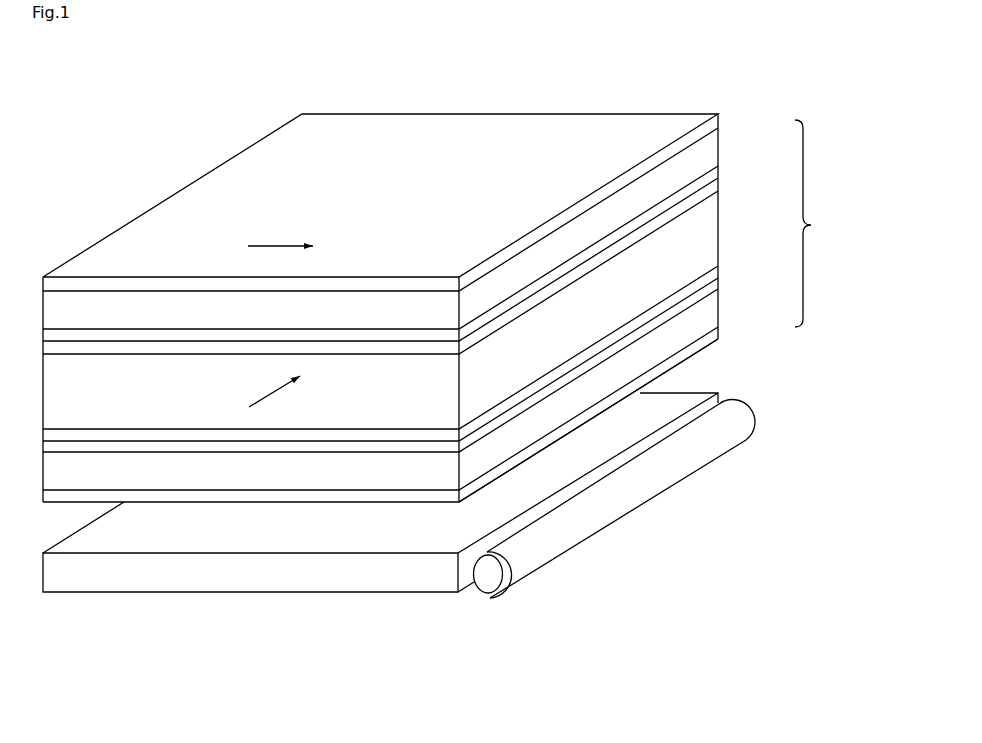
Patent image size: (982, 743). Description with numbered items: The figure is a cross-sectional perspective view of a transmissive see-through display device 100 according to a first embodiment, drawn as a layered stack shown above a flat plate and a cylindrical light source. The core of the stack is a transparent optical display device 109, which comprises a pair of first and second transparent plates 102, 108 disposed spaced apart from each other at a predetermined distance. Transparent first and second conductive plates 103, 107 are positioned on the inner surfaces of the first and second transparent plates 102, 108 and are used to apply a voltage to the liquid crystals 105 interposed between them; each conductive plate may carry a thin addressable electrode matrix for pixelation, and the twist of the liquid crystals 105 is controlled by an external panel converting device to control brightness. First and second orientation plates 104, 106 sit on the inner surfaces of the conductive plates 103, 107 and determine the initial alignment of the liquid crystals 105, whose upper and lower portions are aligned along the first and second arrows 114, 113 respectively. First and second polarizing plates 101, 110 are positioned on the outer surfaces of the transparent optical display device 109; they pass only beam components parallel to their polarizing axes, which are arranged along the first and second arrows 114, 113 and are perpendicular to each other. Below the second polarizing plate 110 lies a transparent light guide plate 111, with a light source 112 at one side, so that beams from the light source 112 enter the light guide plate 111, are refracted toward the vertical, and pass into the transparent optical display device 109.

The transmissive see-through display device 100 is at (687, 108).
The first polarizing plate 101 is at (718, 125).
The first transparent plate 102 is at (718, 152).
The first transparent conductive plate 103 is at (718, 175).
The first orientation plate 104 is at (718, 187).
The liquid crystals 105 is at (718, 233).
The second orientation plate 106 is at (713, 279).
The second transparent conductive plate 107 is at (718, 290).
The second transparent plate 108 is at (718, 313).
The transparent optical display device 109 is at (822, 223).
The second polarizing plate 110 is at (718, 337).
The transparent light guide plate 111 is at (290, 575).
The light source 112 is at (485, 577).
The second arrow 113 is at (268, 394).
The first arrow 114 is at (282, 247).